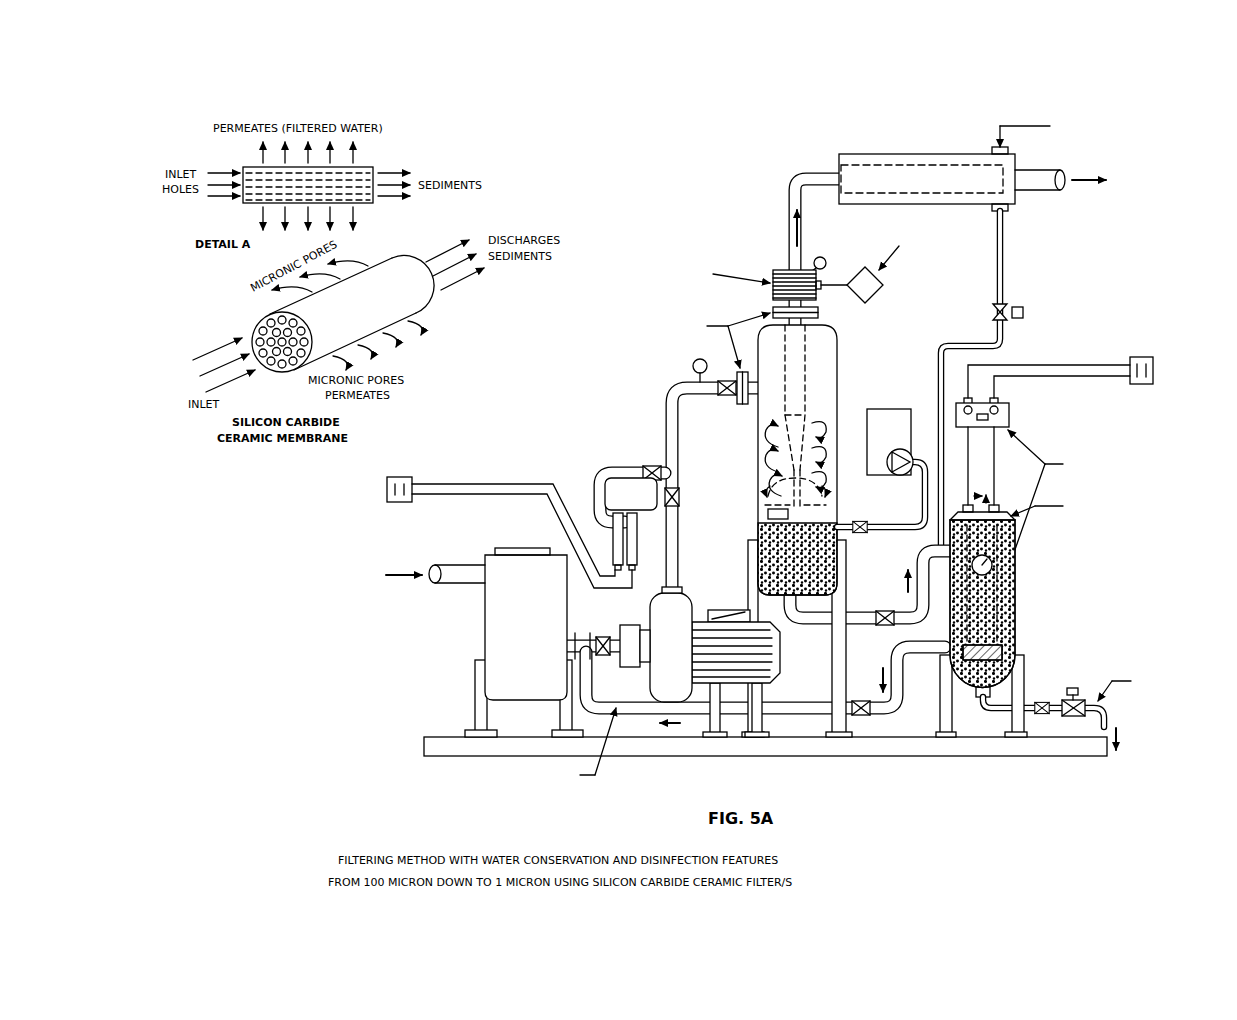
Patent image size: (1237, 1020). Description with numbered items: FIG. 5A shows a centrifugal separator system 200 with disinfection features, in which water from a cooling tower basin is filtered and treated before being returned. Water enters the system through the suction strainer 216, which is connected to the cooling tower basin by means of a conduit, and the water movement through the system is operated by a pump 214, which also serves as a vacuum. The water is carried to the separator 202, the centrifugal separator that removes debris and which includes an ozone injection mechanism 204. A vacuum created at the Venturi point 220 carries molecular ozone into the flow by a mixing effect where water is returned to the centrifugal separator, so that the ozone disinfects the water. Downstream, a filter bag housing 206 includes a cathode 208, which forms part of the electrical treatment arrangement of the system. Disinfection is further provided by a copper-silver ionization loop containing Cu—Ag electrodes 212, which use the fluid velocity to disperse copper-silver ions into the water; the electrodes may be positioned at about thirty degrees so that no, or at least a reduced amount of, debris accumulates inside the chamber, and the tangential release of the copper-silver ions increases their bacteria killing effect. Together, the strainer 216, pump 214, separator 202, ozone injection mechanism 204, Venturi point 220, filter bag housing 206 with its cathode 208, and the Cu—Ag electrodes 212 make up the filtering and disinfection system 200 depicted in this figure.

The filtering system with water conservation and disinfection features 200 is at (681, 245).
The separator 202 is at (840, 357).
The ozone injection mechanism 204 is at (888, 422).
The filter bag housing 206 is at (1017, 563).
The cathode 208 is at (1001, 650).
The Cu—Ag electrodes 212 is at (596, 493).
The pump 214 is at (648, 612).
The suction strainer 216 is at (561, 550).
The Venturi point 220 is at (881, 491).